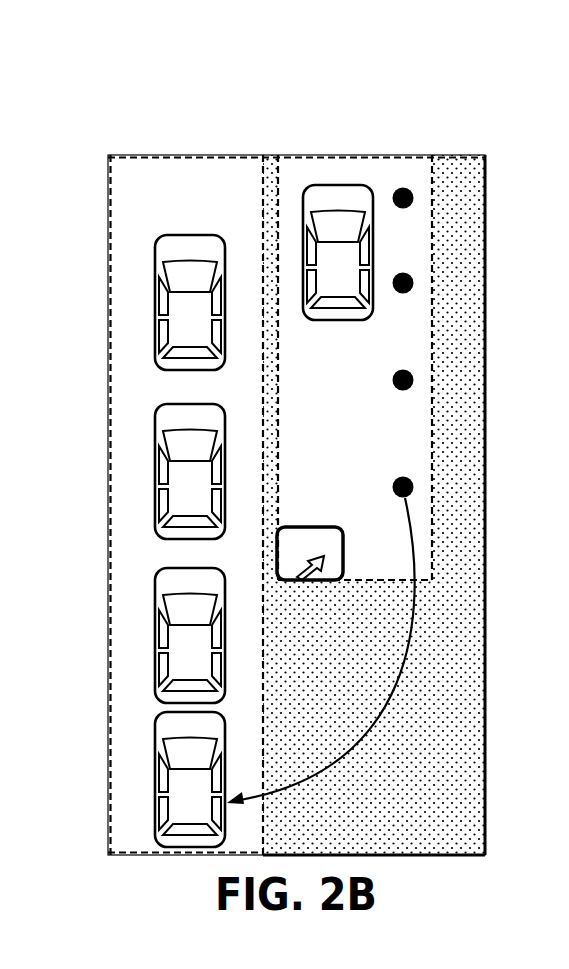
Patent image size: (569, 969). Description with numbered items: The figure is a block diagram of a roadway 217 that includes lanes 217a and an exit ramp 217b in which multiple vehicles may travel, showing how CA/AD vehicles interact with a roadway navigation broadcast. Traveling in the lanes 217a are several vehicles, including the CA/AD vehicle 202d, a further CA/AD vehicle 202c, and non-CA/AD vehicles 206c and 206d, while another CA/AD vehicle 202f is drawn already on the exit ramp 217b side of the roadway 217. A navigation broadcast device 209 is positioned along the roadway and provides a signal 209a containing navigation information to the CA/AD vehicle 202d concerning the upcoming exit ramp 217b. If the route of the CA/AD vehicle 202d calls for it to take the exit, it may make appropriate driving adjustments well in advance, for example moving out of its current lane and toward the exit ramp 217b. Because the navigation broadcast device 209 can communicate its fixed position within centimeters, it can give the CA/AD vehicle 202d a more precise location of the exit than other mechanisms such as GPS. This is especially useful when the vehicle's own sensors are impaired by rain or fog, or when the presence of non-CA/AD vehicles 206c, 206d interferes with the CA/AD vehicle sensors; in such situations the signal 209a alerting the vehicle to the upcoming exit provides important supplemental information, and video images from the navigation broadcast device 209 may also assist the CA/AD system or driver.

The roadway 217 is at (485, 67).
The lanes 217a is at (182, 199).
The exit ramp 217b is at (295, 175).
The vehicle 202c is at (155, 251).
The CA/AD vehicle 202d is at (155, 768).
The CA/AD vehicle 202f is at (340, 186).
The parked vehicle 206c is at (155, 431).
The non-CA/AD vehicle 206d is at (155, 600).
The navigation broadcast device 209 is at (413, 194).
The signal 209a is at (397, 682).